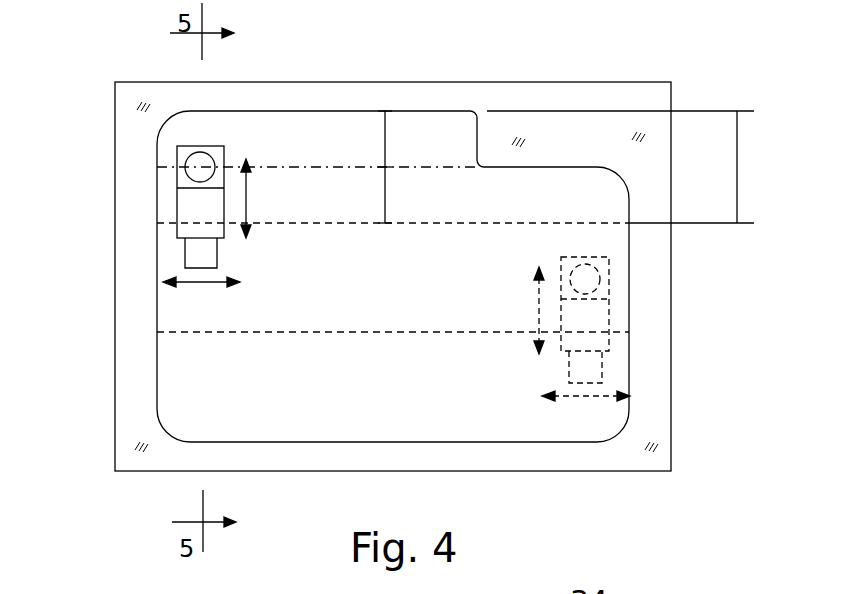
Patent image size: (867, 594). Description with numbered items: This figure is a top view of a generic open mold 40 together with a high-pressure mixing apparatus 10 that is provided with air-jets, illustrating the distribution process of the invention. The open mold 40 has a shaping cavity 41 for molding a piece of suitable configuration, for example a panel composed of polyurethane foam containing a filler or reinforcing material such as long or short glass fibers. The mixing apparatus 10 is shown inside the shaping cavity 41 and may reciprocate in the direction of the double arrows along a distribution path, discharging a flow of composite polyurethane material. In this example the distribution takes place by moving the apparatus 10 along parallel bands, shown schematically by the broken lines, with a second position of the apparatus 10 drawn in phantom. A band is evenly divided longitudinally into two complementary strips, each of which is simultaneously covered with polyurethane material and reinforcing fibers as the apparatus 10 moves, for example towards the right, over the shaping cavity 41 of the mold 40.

The high-pressure mixing apparatus 10 is at (163, 152).
The open mold 40 is at (505, 97).
The shaping cavity 41 is at (187, 412).